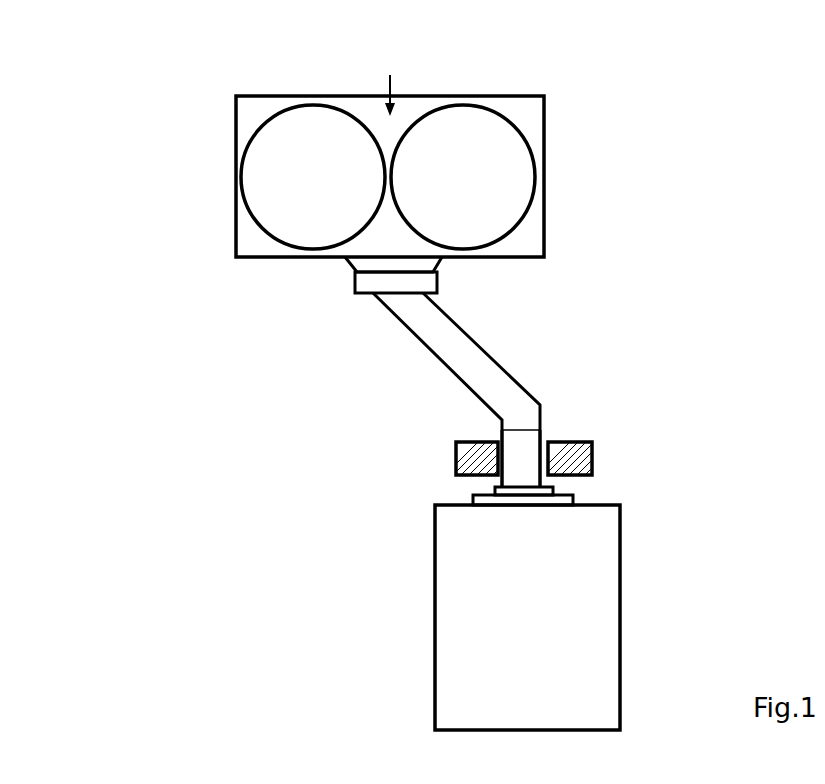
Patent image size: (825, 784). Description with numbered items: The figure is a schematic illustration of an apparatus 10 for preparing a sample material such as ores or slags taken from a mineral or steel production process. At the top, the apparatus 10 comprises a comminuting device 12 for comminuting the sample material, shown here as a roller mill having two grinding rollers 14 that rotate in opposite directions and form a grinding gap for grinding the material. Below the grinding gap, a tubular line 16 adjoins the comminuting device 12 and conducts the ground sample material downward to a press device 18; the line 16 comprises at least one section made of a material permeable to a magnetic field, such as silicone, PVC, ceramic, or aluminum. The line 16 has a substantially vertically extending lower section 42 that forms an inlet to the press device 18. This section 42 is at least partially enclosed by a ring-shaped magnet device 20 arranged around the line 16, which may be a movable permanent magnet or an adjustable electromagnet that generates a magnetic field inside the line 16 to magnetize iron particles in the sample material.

The apparatus 10 is at (137, 110).
The comminuting device 12 is at (547, 95).
The grinding rollers 14 is at (508, 182).
The line 16 is at (497, 385).
The lower section 42 is at (523, 442).
The magnet device 20 is at (595, 445).
The press device 18 is at (588, 600).